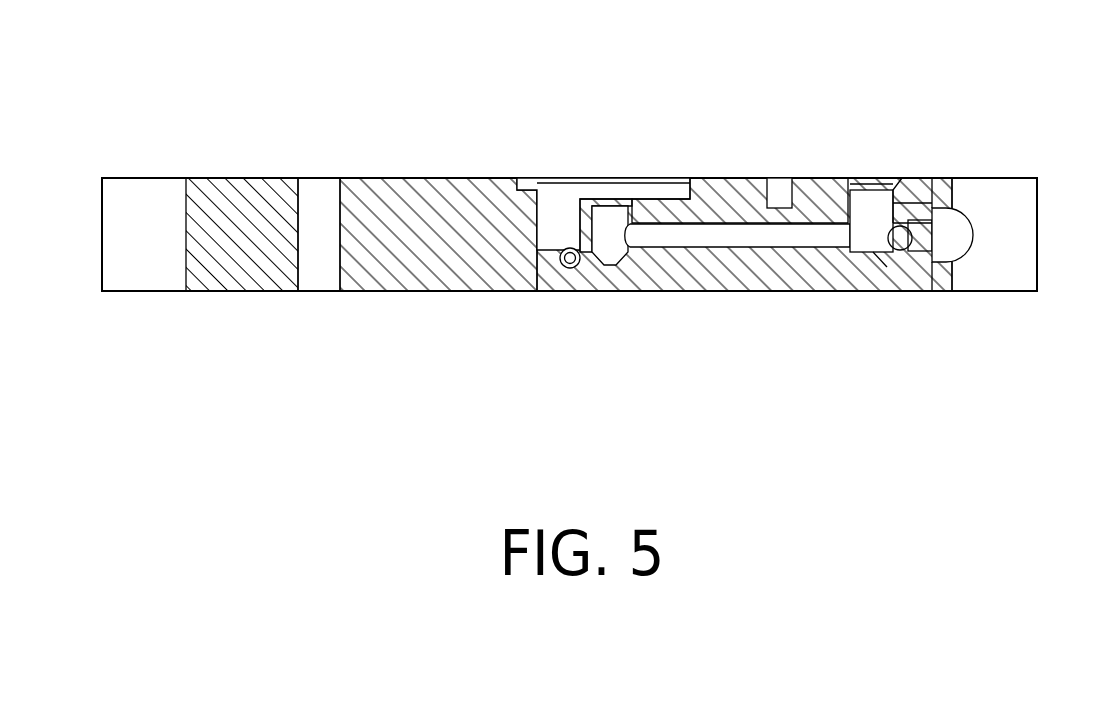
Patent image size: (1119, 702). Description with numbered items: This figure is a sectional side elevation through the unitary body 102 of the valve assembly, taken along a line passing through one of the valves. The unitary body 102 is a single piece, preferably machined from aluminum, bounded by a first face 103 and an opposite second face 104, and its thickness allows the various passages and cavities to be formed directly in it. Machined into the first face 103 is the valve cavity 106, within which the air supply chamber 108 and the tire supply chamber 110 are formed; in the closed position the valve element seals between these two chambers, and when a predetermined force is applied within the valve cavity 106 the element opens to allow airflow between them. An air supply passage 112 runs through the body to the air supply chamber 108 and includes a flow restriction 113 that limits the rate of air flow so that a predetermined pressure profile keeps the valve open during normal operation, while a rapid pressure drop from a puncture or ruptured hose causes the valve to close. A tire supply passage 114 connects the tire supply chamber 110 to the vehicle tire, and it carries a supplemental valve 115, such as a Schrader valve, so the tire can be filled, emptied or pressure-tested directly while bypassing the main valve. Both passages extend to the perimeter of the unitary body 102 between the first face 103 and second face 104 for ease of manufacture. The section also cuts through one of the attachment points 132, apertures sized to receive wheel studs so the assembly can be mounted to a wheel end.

The unitary body 102 is at (1024, 144).
The first face 103 is at (382, 178).
The second face 104 is at (403, 290).
The valve cavity 106 is at (665, 182).
The air supply chamber 108 is at (553, 215).
The tire supply chamber 110 is at (608, 225).
The air supply passage 112 is at (577, 268).
The flow restriction 113 is at (570, 268).
The tire supply passage 114 is at (720, 242).
The supplemental valve 115 is at (778, 187).
The attachment points 132 is at (318, 280).